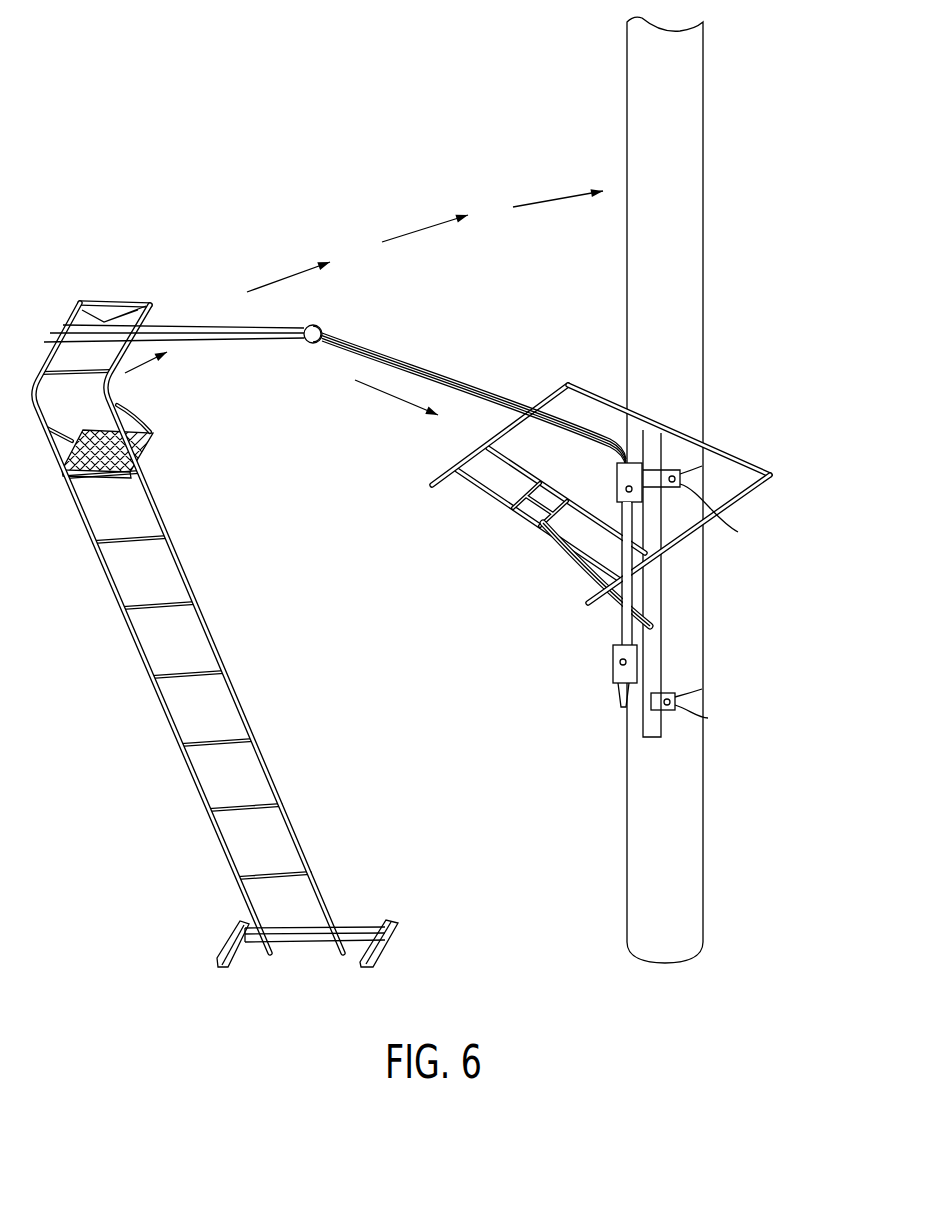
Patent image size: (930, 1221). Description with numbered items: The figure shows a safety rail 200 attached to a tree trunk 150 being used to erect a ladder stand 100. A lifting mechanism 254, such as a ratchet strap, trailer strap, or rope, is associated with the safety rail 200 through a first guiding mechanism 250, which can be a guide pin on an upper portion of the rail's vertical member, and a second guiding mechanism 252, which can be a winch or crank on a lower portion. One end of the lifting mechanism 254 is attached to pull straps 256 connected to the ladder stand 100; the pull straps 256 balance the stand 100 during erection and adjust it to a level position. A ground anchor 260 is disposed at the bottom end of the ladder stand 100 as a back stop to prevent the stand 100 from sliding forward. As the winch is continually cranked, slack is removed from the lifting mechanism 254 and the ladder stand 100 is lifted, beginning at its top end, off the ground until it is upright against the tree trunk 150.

The ladder stand 100 is at (175, 533).
The tree trunk 150 is at (629, 80).
The safety rail 200 is at (505, 573).
The first guiding mechanism 250 is at (617, 484).
The second guiding mechanism 252 is at (613, 668).
The lifting mechanism 254 is at (472, 386).
The pull straps 256 is at (214, 336).
The ground anchor 260 is at (393, 943).